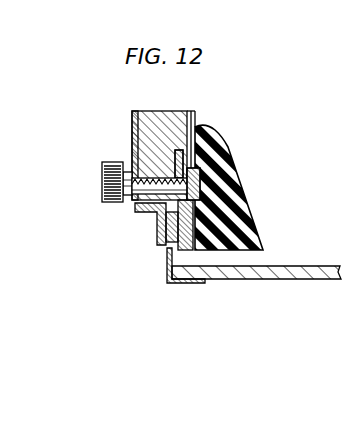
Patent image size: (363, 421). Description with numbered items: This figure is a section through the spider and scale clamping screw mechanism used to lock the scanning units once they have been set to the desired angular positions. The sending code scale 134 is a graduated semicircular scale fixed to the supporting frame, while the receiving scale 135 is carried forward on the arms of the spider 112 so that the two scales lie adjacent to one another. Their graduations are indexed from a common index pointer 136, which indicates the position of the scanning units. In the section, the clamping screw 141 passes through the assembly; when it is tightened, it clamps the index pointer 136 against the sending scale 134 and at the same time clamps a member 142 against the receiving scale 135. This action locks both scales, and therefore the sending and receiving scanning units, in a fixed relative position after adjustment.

The spider 112 is at (298, 279).
The sending code scale 134 is at (168, 230).
The receiving scale 135 is at (168, 255).
The index pointer 136 is at (160, 213).
The clamping screw 141 is at (102, 172).
The member 142 is at (243, 190).